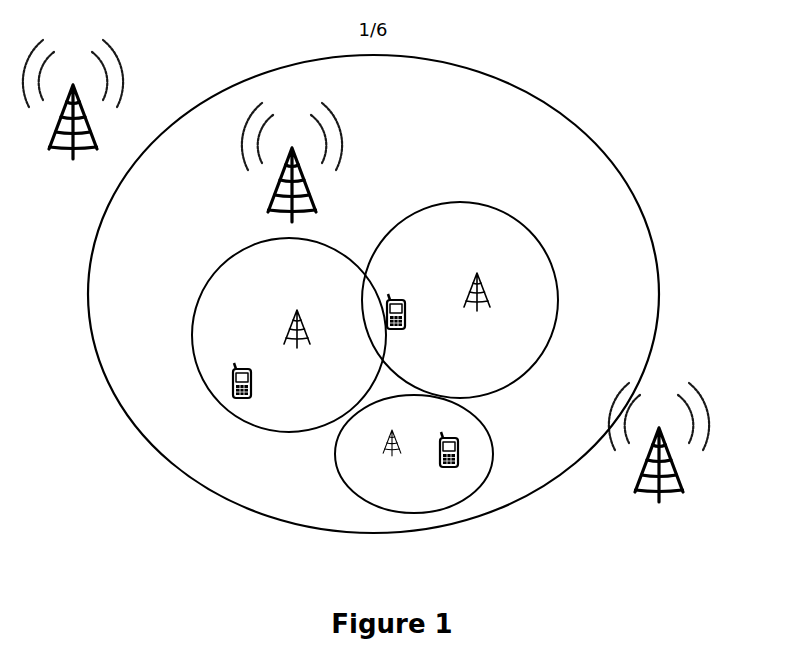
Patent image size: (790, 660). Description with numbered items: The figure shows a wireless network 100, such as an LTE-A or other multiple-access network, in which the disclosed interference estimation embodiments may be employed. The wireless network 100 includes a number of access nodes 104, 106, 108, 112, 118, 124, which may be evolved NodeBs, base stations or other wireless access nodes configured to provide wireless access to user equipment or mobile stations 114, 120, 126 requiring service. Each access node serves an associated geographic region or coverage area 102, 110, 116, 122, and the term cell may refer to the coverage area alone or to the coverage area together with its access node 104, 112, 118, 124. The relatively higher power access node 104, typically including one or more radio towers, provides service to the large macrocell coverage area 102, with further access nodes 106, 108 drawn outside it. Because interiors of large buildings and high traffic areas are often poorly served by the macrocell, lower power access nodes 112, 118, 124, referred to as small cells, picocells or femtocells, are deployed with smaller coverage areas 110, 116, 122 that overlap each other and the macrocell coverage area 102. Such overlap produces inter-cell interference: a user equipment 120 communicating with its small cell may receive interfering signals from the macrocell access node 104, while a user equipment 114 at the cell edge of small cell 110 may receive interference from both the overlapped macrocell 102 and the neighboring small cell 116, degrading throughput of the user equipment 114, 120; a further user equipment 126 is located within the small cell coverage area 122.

The wireless network 100 is at (630, 55).
The coverage area 102 is at (200, 488).
The access node 104 is at (292, 162).
The access node 106 is at (659, 442).
The access node 108 is at (73, 99).
The coverage area 110 is at (512, 215).
The access node 112 is at (477, 283).
The user equipment 114 is at (389, 302).
The coverage area 116 is at (228, 262).
The access node 118 is at (297, 320).
The user equipment 120 is at (240, 372).
The coverage area 122 is at (358, 498).
The access node 124 is at (393, 433).
The user equipment 126 is at (447, 441).